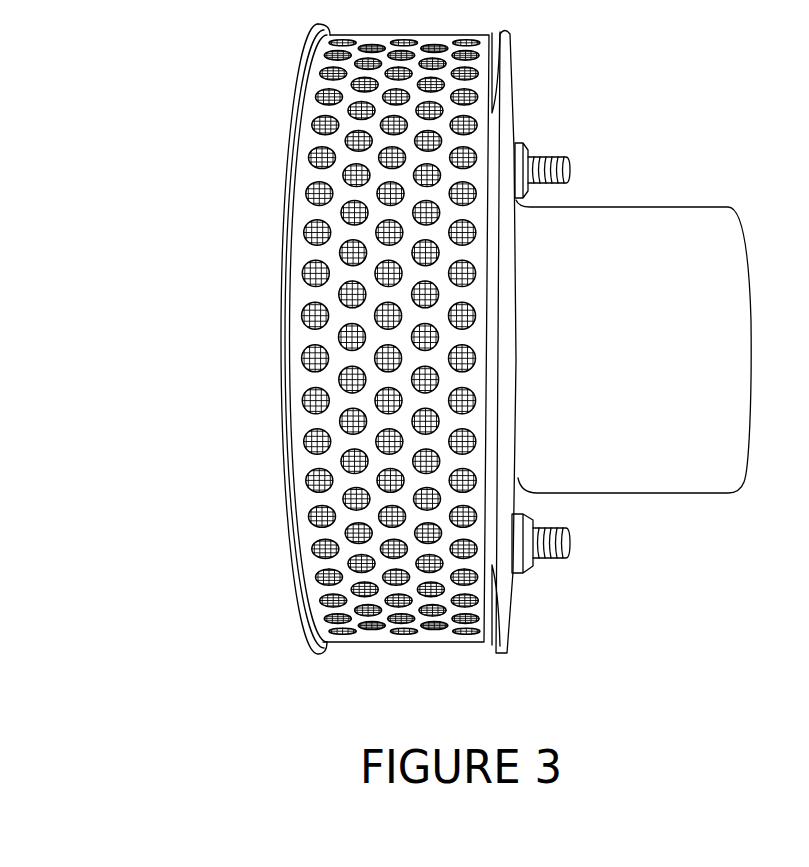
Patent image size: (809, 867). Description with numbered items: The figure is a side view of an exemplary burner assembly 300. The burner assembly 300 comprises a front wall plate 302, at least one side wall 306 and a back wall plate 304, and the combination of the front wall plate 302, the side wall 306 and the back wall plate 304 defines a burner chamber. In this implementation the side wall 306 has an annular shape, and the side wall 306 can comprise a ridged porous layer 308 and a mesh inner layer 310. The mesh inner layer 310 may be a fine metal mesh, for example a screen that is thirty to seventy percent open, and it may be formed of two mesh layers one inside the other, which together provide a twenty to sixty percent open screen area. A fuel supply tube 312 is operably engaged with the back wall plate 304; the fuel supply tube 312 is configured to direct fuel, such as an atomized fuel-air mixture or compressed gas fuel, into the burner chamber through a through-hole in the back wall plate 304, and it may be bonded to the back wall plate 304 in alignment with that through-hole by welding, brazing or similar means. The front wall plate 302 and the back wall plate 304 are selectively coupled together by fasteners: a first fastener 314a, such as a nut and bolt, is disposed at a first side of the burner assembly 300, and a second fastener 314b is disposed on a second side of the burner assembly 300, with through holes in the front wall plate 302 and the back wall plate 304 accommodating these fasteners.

The burner assembly 300 is at (262, 92).
The front wall plate 302 is at (290, 543).
The back wall plate 304 is at (507, 77).
The side wall 306 is at (310, 426).
The ridged porous layer 308 is at (327, 297).
The mesh inner layer 310 is at (322, 232).
The fuel supply tube 312 is at (648, 253).
The first fastener 314a is at (570, 162).
The second fastener 314b is at (570, 546).